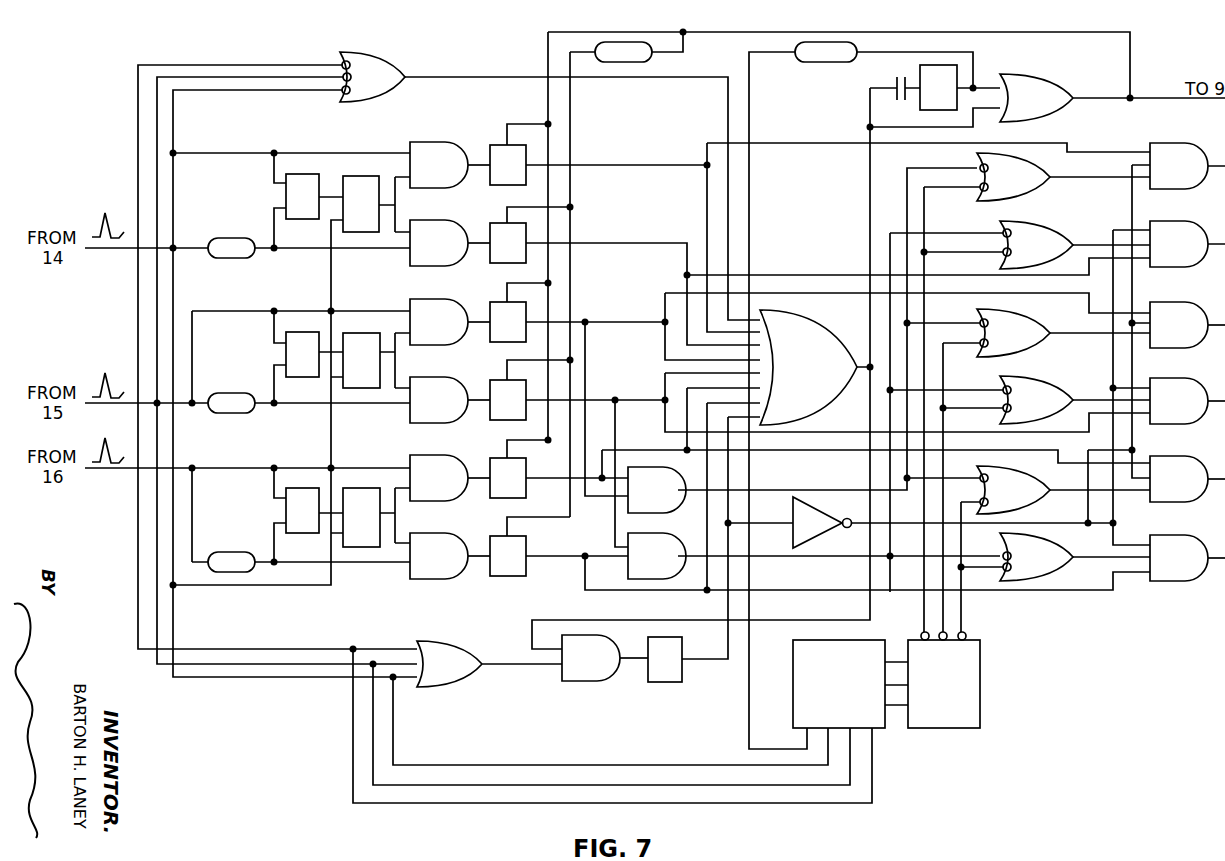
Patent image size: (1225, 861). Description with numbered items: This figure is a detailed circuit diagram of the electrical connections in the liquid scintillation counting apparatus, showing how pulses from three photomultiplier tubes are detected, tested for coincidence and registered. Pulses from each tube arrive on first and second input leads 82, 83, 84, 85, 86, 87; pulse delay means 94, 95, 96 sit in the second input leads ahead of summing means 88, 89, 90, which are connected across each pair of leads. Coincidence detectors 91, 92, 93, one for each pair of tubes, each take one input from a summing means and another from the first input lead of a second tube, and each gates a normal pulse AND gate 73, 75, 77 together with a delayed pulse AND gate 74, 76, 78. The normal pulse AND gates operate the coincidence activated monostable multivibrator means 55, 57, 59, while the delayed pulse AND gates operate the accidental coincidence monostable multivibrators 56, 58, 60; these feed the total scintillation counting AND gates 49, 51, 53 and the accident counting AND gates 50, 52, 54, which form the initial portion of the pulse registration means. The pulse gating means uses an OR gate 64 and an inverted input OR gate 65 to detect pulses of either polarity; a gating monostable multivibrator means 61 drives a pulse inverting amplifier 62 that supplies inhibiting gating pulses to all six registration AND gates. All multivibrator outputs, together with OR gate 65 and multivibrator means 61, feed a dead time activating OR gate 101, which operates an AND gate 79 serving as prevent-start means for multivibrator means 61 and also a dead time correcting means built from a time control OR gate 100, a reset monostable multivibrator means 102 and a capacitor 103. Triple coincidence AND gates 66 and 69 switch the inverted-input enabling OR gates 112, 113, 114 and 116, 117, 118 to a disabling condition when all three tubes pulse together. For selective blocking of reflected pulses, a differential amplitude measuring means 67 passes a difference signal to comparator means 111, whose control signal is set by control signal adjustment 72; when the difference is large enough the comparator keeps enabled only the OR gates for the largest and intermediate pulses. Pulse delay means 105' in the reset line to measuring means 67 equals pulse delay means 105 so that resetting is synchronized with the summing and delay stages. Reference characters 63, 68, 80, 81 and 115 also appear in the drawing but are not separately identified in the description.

The total scintillation counting AND gate 49 is at (1177, 310).
The accident counting AND gate 50 is at (1168, 383).
The total scintillation counting AND gate 51 is at (1187, 325).
The accident counting AND gate 52 is at (1187, 401).
The total scintillation counting AND gate 53 is at (1187, 479).
The accident counting AND gate 54 is at (1187, 558).
The coincidence activated monostable multivibrator means 55 is at (598, 154).
The accidental coincidence monostable multivibrator 56 is at (820, 276).
The coincidence activated monostable multivibrator means 57 is at (579, 312).
The accidental coincidence monostable multivibrator 58 is at (579, 390).
The coincidence activated monostable multivibrator means 59 is at (559, 469).
The accidental coincidence monostable multivibrator 60 is at (559, 546).
The gating monostable multivibrator means 61 is at (665, 659).
The pulse inverting amplifier 62 is at (932, 498).
The line from counter 63 is at (943, 372).
The OR gate 64 is at (489, 664).
The inverted input OR gate 65 is at (550, 186).
The triple coincidence AND gate 66 is at (781, 340).
The differential amplitude measuring means 67 is at (630, 721).
The line from counter 68 is at (963, 584).
The triple coincidence AND gate 69 is at (807, 489).
The control signal adjustment 72 is at (981, 705).
The normal pulse AND gate 73 is at (450, 165).
The delayed pulse AND gate 74 is at (450, 243).
The normal pulse AND gate 75 is at (450, 322).
The delayed pulse AND gate 76 is at (450, 400).
The normal pulse AND gate 77 is at (450, 478).
The delayed pulse AND gate 78 is at (450, 556).
The AND gate 79 is at (138, 290).
The input line 80 is at (157, 316).
The input line 81 is at (173, 353).
The first input lead 82 is at (205, 152).
The second input lead 83 is at (185, 247).
The first input lead 84 is at (208, 313).
The second input lead 85 is at (264, 402).
The first input lead 86 is at (220, 470).
The second input lead 87 is at (200, 560).
The summing means 88 is at (308, 200).
The summing means 89 is at (308, 357).
The summing means 90 is at (308, 515).
The coincidence detector 91 is at (291, 380).
The coincidence detector 92 is at (370, 360).
The coincidence detector 93 is at (370, 517).
The pulse delay means 94 is at (231, 248).
The pulse delay means 95 is at (231, 403).
The pulse delay means 96 is at (231, 562).
The time control OR gate 100 is at (1112, 98).
The dead time activating OR gate 101 is at (867, 401).
The reset monostable multivibrator means 102 is at (960, 87).
The capacitor 103 is at (897, 84).
The pulse delay means 105 is at (839, 273).
The pulse delay means 105' is at (863, 395).
The comparator means 111 is at (944, 680).
The enabling OR gate 112 is at (1036, 392).
The enabling OR gate 113 is at (1028, 470).
The enabling OR gate 114 is at (1028, 549).
The line from counter 115 is at (925, 218).
The enabling OR gate 116 is at (1019, 406).
The enabling OR gate 117 is at (1020, 400).
The enabling OR gate 118 is at (1055, 557).